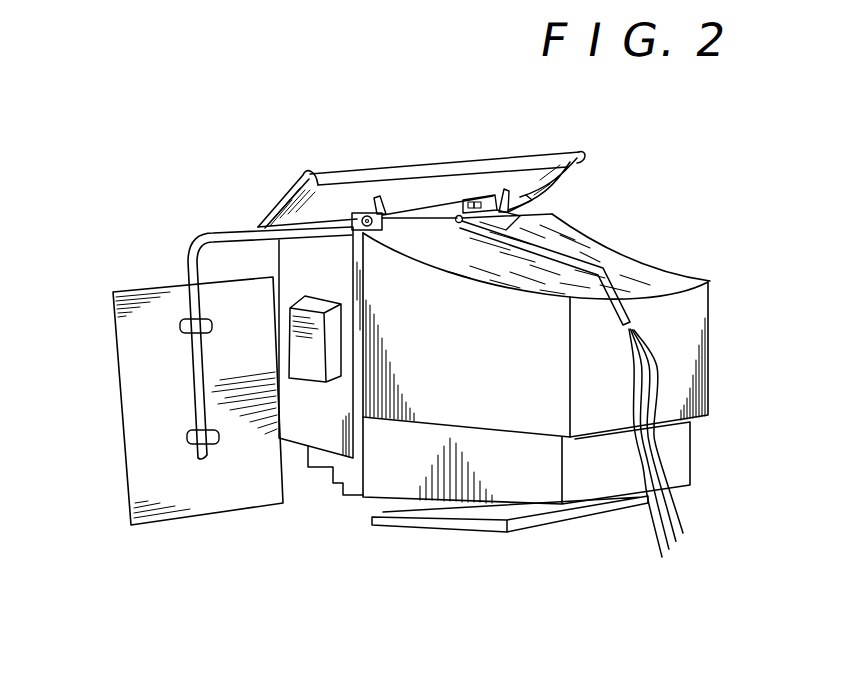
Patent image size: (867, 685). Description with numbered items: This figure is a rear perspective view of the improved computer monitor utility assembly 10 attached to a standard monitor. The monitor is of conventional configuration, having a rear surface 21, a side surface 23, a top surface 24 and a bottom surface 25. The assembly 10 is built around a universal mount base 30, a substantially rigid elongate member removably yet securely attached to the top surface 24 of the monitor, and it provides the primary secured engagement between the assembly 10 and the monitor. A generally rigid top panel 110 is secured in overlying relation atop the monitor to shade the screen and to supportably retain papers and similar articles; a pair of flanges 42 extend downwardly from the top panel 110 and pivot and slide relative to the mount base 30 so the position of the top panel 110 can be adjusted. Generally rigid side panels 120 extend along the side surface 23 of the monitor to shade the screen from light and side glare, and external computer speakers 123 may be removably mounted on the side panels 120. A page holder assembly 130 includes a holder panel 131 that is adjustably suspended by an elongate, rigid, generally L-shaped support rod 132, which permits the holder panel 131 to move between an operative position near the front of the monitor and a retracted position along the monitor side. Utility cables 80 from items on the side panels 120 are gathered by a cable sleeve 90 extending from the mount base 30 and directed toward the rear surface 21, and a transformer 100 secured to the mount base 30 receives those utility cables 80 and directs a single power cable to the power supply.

The computer monitor utility assembly 10 is at (277, 110).
The transformer 100 is at (423, 207).
The top panel 110 is at (441, 170).
The flanges 42 is at (380, 200).
The support rod 132 is at (217, 230).
The page holder assembly 130 is at (184, 240).
The holder panel 131 is at (127, 288).
The side panels 120 is at (338, 277).
The external computer speakers 123 is at (312, 357).
The top surface 24 is at (465, 254).
The side surface 23 is at (466, 337).
The rear surface 21 is at (611, 354).
The universal mount base 30 is at (517, 210).
The cable sleeve 90 is at (587, 260).
The utility cables 80 is at (685, 515).
The bottom surface 25 is at (375, 501).